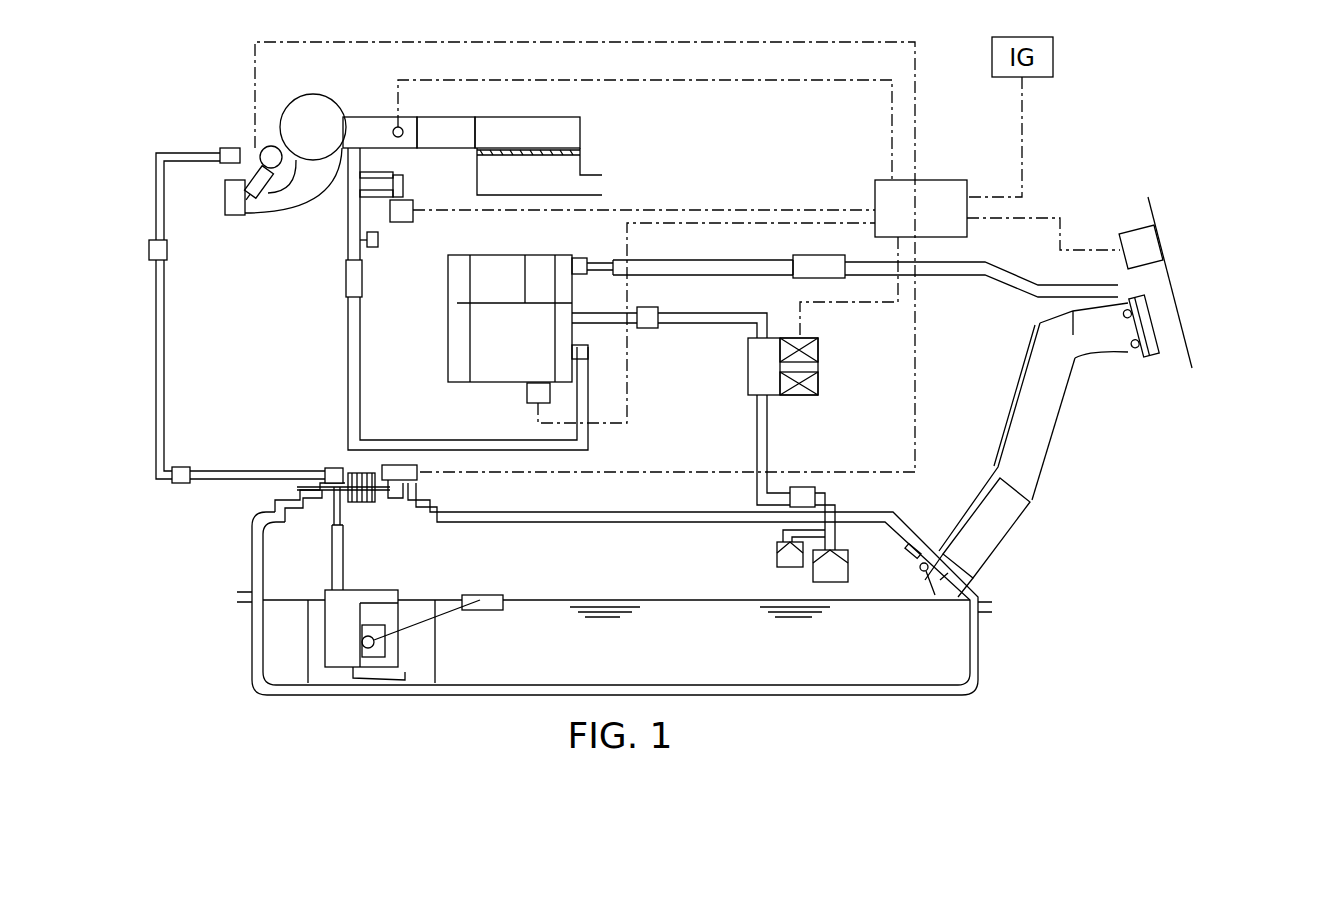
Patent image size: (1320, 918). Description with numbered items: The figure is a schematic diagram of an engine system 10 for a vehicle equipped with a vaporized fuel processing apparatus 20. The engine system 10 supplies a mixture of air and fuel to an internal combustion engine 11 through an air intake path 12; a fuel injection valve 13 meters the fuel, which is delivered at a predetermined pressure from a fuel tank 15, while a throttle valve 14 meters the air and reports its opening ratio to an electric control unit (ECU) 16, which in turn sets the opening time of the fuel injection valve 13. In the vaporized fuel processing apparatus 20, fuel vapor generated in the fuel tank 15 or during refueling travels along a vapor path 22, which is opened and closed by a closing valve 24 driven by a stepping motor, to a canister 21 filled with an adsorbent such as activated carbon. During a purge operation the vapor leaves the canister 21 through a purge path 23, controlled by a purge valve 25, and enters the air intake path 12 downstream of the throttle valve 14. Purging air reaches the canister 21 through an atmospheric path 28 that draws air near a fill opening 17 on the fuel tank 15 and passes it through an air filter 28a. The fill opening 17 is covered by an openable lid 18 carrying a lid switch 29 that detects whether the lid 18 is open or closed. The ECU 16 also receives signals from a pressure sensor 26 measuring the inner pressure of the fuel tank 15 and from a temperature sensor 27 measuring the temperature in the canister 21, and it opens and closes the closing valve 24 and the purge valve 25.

The engine system 10 is at (166, 110).
The internal combustion engine 11 is at (233, 216).
The air intake path 12 is at (282, 197).
The fuel injection valve 13 is at (265, 198).
The throttle valve 14 is at (392, 147).
The fuel tank 15 is at (986, 645).
The electric control unit (ECU) 16 is at (933, 180).
The fill opening 17 is at (1112, 347).
The lid 18 is at (1190, 297).
The vaporized fuel processing apparatus 20 is at (688, 198).
The canister 21 is at (446, 339).
The vapor path 22 is at (700, 322).
The purge path 23 is at (348, 172).
The closing valve 24 is at (792, 397).
The purge valve 25 is at (403, 214).
The pressure sensor 26 is at (400, 463).
The temperature sensor 27 is at (526, 388).
The atmospheric path 28 is at (722, 265).
The air filter 28a is at (818, 260).
The lid switch 29 is at (1133, 226).